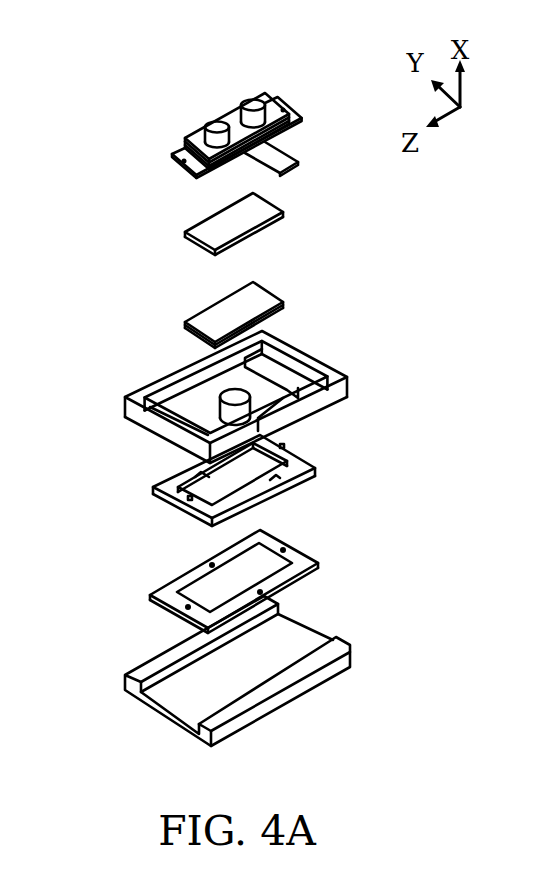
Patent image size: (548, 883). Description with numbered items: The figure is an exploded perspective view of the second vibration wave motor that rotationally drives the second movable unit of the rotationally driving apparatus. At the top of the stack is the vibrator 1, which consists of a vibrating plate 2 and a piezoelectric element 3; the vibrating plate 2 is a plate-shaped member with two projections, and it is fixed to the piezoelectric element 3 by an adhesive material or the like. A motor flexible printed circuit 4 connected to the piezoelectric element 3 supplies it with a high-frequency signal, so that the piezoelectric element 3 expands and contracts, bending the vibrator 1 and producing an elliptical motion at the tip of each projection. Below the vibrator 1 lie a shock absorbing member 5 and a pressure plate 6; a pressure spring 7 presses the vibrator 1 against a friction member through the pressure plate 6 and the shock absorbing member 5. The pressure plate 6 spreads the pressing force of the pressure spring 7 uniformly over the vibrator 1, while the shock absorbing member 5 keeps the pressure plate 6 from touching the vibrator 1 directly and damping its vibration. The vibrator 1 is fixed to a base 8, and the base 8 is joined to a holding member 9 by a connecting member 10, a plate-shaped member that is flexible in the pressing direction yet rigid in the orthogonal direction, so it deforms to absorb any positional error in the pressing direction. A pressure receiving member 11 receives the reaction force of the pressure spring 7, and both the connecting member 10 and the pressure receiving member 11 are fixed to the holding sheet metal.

The vibrator 1 is at (212, 102).
The vibrating plate 2 is at (253, 105).
The piezoelectric element 3 is at (283, 133).
The motor flexible printed circuit 4 is at (270, 160).
The shock absorbing member 5 is at (227, 227).
The pressure plate 6 is at (227, 315).
The pressure spring 7 is at (220, 407).
The base 8 is at (325, 375).
The holding member 9 is at (297, 460).
The connecting member 10 is at (165, 590).
The pressure receiving member 11 is at (297, 645).